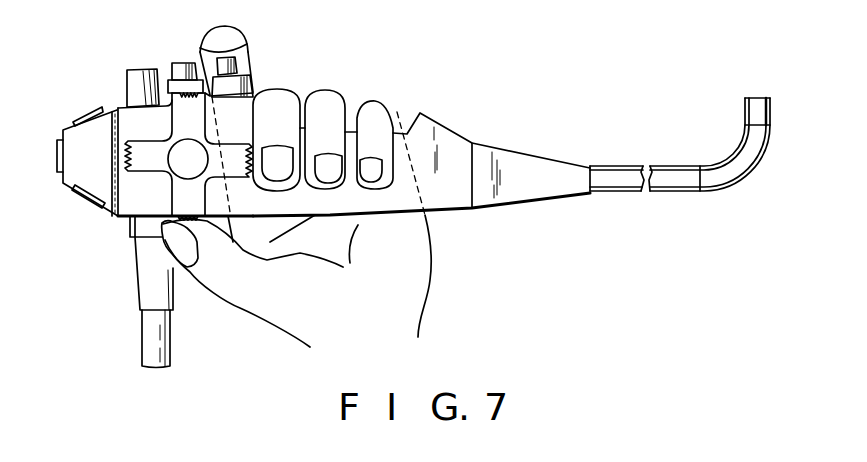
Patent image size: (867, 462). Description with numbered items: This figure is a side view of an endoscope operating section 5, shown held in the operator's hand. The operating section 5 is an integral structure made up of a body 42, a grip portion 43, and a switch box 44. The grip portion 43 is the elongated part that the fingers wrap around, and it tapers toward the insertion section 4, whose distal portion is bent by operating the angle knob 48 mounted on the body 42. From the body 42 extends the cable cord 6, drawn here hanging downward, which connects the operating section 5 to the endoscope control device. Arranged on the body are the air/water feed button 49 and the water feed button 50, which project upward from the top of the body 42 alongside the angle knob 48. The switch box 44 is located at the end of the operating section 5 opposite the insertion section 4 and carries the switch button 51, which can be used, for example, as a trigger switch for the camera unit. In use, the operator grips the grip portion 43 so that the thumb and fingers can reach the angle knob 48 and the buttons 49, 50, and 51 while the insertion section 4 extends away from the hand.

The insertion section 4 is at (623, 193).
The operating section 5 is at (321, 75).
The cable cord 6 is at (173, 332).
The body 42 is at (122, 200).
The grip portion 43 is at (394, 204).
The switch box 44 is at (78, 143).
The angle knob 48 is at (140, 142).
The air/water feed button 49 is at (233, 60).
The water feed button 50 is at (187, 63).
The switch button 51 is at (140, 68).